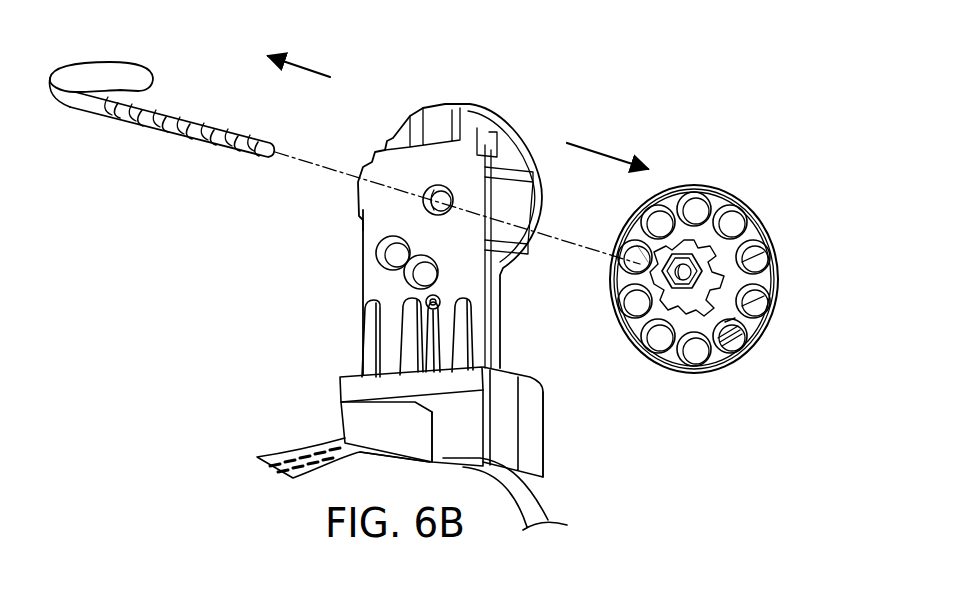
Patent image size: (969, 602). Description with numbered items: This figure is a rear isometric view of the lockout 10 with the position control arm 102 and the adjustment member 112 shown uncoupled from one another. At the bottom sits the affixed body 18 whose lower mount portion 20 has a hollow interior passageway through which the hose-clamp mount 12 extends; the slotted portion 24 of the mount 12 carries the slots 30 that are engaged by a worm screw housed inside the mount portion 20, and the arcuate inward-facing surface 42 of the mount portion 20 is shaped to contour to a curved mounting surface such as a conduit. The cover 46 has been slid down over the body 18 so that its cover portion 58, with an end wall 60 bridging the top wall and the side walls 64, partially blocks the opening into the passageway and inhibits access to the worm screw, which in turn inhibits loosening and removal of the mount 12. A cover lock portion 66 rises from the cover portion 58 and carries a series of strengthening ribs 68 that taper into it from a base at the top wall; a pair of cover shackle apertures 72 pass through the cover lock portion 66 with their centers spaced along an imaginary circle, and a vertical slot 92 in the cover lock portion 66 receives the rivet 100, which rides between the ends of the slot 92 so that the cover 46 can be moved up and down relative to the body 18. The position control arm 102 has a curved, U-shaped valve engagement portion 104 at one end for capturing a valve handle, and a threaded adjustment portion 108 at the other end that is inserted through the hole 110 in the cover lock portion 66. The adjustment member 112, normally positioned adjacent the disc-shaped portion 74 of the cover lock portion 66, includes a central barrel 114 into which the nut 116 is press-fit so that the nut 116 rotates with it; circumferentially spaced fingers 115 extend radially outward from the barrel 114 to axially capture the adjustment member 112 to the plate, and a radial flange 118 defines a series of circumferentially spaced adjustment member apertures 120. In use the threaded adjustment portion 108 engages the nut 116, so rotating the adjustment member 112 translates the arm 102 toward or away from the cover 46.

The lockout device 10 is at (693, 248).
The hose-clamp mount 12 is at (558, 512).
The affixed body 18 is at (451, 411).
The lower mount portion 20 is at (401, 437).
The slotted portion 24 is at (338, 446).
The slots 30 is at (320, 458).
The inward-facing surface 42 is at (370, 455).
The cover 46 is at (541, 411).
The cover portion 58 is at (545, 432).
The end wall 60 is at (516, 427).
The side walls 64 is at (472, 424).
The cover lock portion 66 is at (360, 222).
The strengthening ribs 68 is at (400, 305).
The cover shackle apertures 72 is at (432, 260).
The disc-shaped portion 74 is at (426, 221).
The vertical slot 92 is at (437, 333).
The rivet 100 is at (445, 296).
The position control arm 102 is at (162, 105).
The valve engagement portion 104 is at (105, 63).
The adjustment portion 108 is at (197, 115).
The hole 110 is at (437, 186).
The adjustment member 112 is at (742, 187).
The central barrel 114 is at (760, 330).
The fingers 115 is at (757, 222).
The nut 116 is at (741, 231).
The radial flange 118 is at (778, 271).
The adjustment member apertures 120 is at (648, 262).